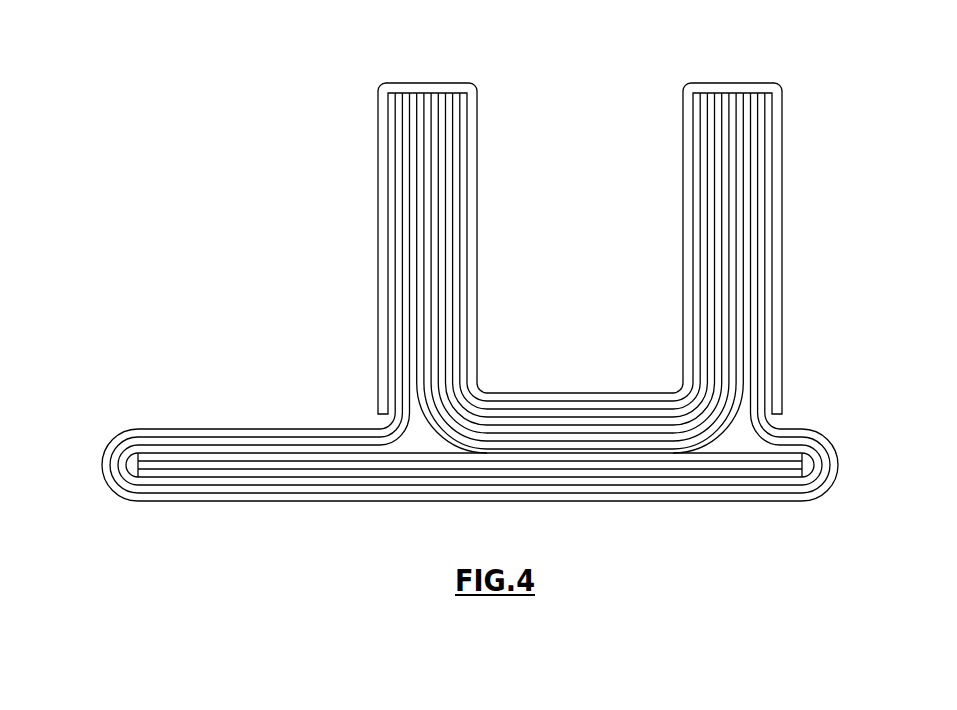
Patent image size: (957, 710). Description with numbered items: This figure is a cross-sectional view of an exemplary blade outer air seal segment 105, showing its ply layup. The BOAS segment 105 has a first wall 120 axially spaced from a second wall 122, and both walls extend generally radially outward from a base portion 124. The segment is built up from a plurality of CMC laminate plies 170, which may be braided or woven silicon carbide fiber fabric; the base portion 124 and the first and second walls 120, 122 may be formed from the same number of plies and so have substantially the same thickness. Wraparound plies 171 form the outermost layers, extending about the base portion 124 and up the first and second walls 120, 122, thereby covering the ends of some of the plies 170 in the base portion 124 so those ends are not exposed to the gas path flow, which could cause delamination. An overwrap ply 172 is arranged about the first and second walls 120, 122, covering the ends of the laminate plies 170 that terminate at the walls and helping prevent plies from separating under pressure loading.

The BOAS segment 105 is at (822, 85).
The first wall 120 is at (430, 117).
The second wall 122 is at (724, 118).
The base portion 124 is at (611, 472).
The laminate plies 170 is at (364, 470).
The wraparound plies 171 is at (112, 497).
The overwrap ply 172 is at (478, 302).